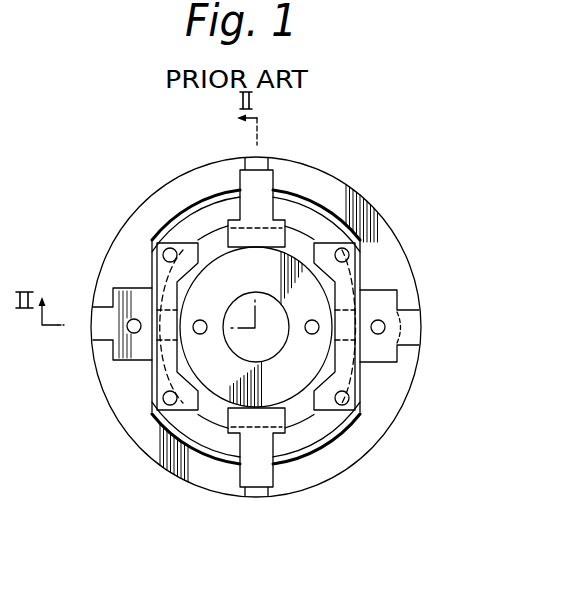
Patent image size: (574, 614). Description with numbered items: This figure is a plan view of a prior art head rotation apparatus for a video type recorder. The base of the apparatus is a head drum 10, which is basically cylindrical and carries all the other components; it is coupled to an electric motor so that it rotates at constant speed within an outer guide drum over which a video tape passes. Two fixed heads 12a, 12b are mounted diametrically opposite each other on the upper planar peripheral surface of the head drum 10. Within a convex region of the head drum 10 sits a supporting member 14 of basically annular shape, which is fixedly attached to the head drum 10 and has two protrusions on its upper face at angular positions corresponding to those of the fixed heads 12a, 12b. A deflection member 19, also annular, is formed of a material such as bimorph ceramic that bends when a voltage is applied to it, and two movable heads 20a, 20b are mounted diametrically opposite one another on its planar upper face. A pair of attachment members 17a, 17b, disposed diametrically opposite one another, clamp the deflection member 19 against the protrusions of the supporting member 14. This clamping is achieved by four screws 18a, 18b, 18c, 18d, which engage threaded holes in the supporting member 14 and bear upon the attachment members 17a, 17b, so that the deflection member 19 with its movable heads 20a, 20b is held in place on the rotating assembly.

The head drum 10 is at (203, 486).
The fixed head 12a is at (98, 287).
The fixed head 12b is at (402, 292).
The supporting member 14 is at (320, 210).
The attachment member 17a is at (162, 273).
The attachment member 17b is at (353, 380).
The screw 18a is at (343, 253).
The screw 18b is at (342, 407).
The screw 18c is at (162, 402).
The screw 18d is at (168, 256).
The deflection member 19 is at (208, 243).
The movable head 20a is at (280, 477).
The movable head 20b is at (276, 188).